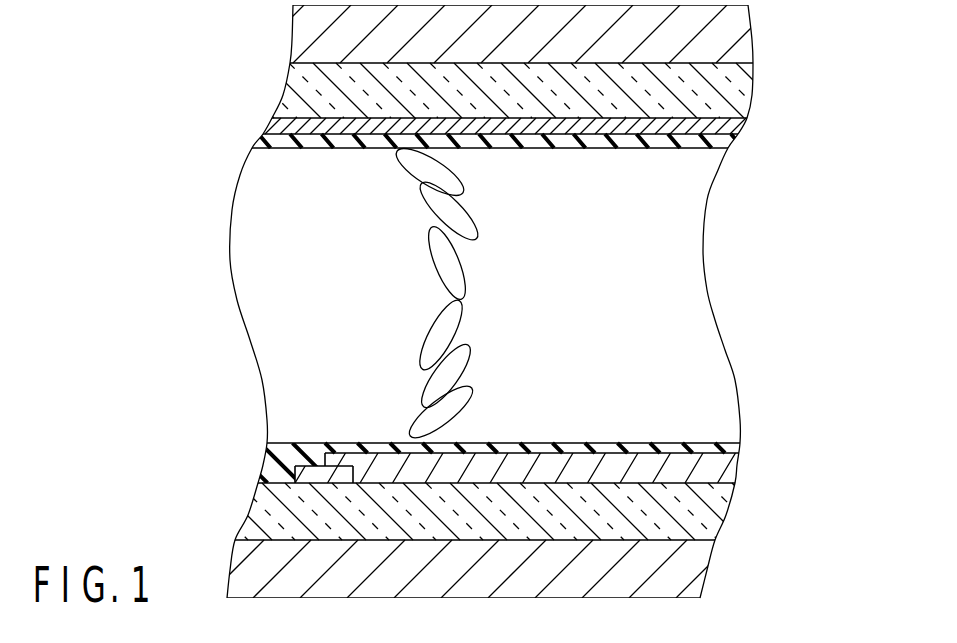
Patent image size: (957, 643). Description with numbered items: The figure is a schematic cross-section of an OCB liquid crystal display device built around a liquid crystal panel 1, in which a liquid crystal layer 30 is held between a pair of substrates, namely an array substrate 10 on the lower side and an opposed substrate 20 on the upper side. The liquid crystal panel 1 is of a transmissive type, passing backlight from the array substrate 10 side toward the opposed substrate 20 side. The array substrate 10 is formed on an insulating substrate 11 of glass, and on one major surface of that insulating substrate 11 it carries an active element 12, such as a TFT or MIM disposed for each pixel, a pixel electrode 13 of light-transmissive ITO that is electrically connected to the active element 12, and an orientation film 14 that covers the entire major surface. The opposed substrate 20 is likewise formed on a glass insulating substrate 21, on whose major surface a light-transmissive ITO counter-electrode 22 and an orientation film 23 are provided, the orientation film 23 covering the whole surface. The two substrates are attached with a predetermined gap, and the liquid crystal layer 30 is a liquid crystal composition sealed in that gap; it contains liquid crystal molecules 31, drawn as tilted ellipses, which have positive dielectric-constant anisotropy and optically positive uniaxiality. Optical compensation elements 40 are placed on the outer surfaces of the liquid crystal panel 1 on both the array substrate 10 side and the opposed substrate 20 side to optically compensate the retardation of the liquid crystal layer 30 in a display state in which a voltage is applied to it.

The liquid crystal panel 1 is at (517, 301).
The array substrate 10 is at (502, 466).
The insulating substrate 11 is at (478, 511).
The active element 12 is at (317, 452).
The pixel electrode 13 is at (731, 468).
The orientation film 14 is at (722, 443).
The opposed substrate 20 is at (521, 110).
The insulating substrate 21 is at (733, 90).
The counter-electrode 22 is at (722, 127).
The orientation film 23 is at (500, 142).
The liquid crystal layer 30 is at (573, 292).
The liquid crystal molecules 31 is at (457, 277).
The optical compensation elements 40 is at (743, 27).